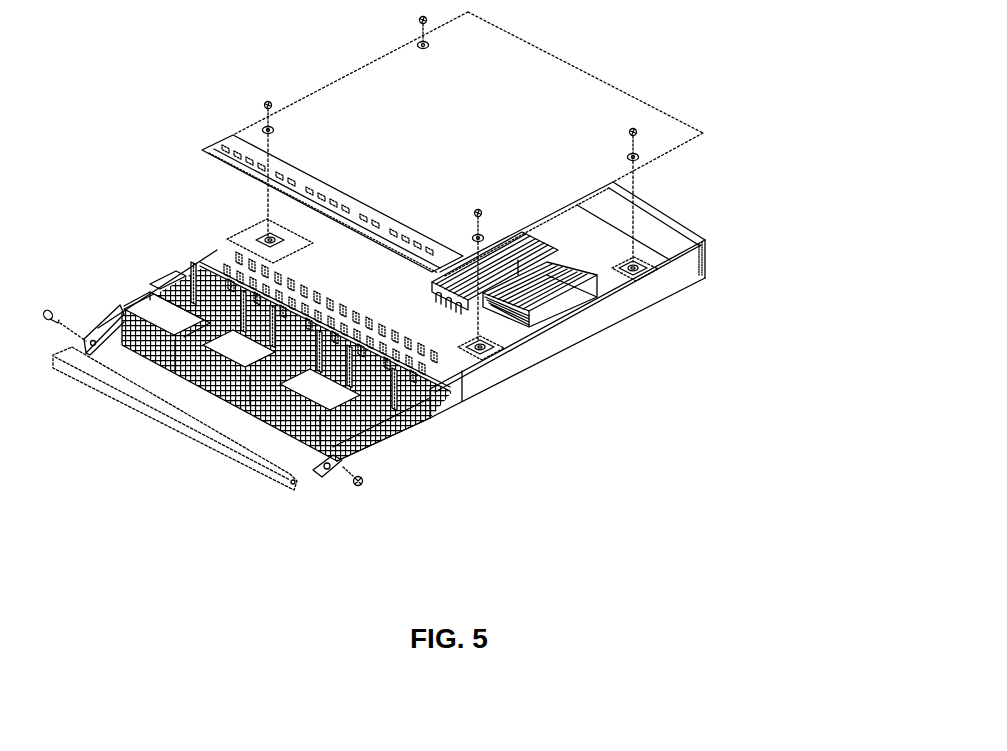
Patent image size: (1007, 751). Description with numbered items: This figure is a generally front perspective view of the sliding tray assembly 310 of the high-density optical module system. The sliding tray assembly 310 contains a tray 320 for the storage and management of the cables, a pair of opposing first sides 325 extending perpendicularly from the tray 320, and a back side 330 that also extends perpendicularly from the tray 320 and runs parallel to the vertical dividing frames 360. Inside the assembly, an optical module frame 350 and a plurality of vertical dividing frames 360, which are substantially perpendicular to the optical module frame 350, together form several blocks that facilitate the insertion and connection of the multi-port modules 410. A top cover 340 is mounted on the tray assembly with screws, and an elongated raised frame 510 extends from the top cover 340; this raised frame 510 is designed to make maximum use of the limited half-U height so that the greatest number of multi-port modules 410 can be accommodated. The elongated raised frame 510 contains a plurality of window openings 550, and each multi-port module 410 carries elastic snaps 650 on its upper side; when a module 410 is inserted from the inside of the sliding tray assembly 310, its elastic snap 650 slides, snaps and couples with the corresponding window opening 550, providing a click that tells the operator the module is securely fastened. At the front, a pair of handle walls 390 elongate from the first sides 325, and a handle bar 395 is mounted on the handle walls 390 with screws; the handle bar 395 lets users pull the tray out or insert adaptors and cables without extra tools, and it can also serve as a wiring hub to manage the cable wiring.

The sliding tray assembly 310 is at (797, 90).
The tray 320 is at (520, 333).
The first sides 325 is at (643, 297).
The rear wall 330 is at (663, 233).
The top cover 340 is at (530, 84).
The optical module frame 350 is at (200, 262).
The vertical dividing frames 360 is at (178, 278).
The handle walls 390 is at (137, 300).
The handle bar 395 is at (150, 427).
The multi-port modules 410 is at (193, 380).
The elongated raised frame 510 is at (220, 141).
The window openings 550 is at (350, 215).
The elastic snaps 650 is at (162, 290).